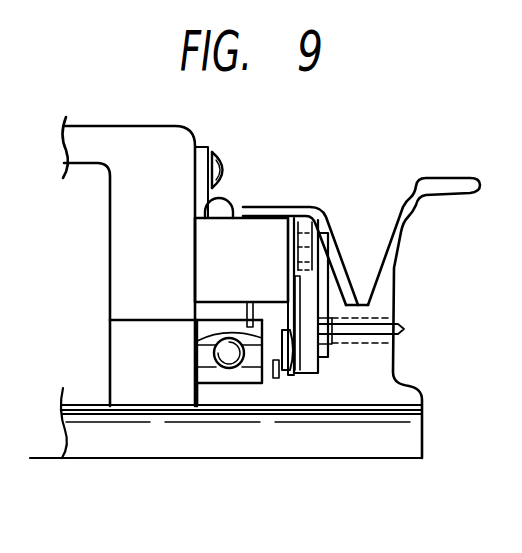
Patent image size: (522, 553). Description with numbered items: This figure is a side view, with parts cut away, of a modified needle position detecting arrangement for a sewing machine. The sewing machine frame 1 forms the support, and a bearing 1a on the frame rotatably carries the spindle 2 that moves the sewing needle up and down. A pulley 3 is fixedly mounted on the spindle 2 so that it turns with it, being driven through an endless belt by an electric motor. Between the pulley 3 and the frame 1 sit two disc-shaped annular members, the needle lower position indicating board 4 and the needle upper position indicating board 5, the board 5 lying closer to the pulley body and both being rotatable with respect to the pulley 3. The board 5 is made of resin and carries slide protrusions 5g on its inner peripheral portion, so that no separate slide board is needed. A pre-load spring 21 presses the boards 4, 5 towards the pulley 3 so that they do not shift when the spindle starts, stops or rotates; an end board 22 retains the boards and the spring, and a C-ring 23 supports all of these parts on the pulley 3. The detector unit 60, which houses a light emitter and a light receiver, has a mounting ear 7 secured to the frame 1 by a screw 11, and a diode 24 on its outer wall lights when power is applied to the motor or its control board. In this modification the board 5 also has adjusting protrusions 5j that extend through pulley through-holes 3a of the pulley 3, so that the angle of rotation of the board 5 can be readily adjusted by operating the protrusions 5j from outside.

The sewing machine frame 1 is at (99, 146).
The bearing 1a is at (213, 372).
The spindle 2 is at (367, 448).
The pulley 3 is at (460, 183).
The pulley through-holes 3a is at (393, 314).
The needle lower position indicating board 4 is at (302, 292).
The needle upper position indicating board 5 is at (312, 232).
The slide protrusions 5g is at (300, 358).
The adjusting protrusions 5j is at (408, 331).
The mounting ear 7 is at (198, 152).
The screw 11 is at (224, 160).
The pre-load spring 21 is at (287, 376).
The end board 22 is at (197, 339).
The C-ring 23 is at (268, 378).
The diode 24 is at (223, 210).
The detector unit 60 is at (247, 250).